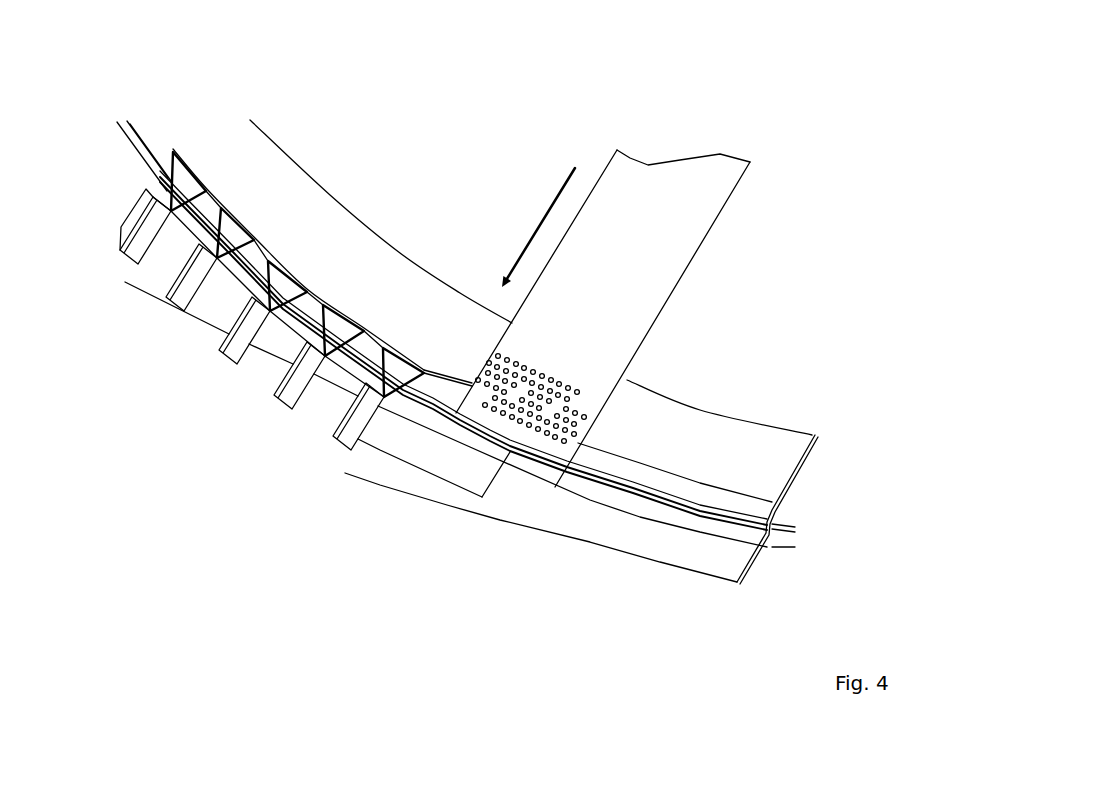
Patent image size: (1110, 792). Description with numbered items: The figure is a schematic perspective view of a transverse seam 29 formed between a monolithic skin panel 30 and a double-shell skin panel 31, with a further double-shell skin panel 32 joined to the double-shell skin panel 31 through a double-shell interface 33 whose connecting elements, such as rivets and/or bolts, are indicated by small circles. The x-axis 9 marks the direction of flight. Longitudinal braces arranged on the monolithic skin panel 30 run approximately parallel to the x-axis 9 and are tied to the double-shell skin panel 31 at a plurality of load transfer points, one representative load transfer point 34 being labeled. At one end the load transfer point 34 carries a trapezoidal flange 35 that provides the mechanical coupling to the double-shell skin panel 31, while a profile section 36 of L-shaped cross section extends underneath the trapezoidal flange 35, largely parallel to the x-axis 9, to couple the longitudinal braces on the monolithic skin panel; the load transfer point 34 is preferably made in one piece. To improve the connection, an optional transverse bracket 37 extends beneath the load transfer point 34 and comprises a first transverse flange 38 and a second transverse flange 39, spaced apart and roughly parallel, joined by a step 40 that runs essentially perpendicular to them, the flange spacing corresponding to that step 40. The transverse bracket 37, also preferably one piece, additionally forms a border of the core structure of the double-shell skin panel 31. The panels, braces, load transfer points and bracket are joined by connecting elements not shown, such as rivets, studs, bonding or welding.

The x-axis 9 is at (575, 168).
The transverse seam 29 is at (106, 106).
The monolithic skin panel 30 is at (180, 362).
The double-shell skin panel 31 is at (364, 174).
The double-shell skin panel 32 is at (744, 387).
The double-shell interface 33 is at (628, 221).
The load transfer point 34 is at (270, 415).
The trapezoidal flange 35 is at (343, 327).
The profile section 36 is at (287, 398).
The transverse bracket 37 is at (430, 405).
The first transverse flange 38 is at (162, 163).
The second transverse flange 39 is at (147, 181).
The step 40 is at (156, 168).